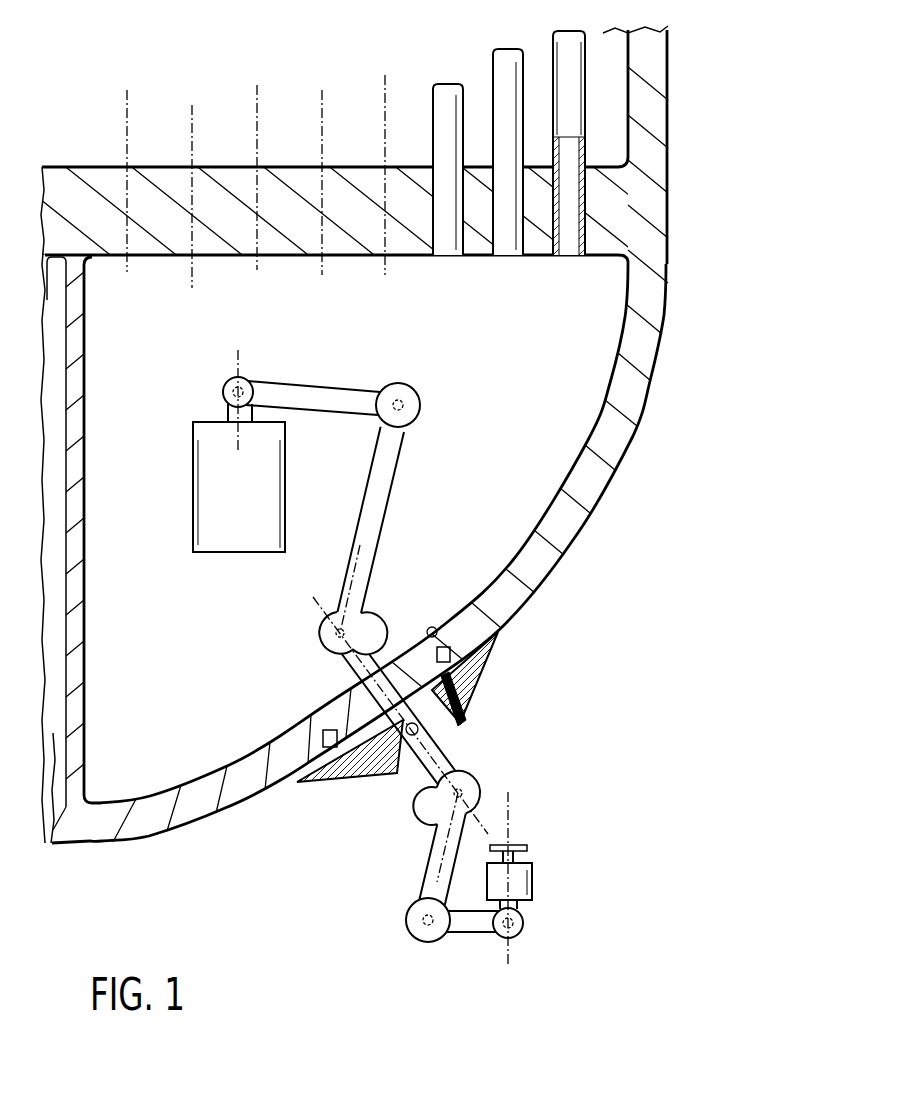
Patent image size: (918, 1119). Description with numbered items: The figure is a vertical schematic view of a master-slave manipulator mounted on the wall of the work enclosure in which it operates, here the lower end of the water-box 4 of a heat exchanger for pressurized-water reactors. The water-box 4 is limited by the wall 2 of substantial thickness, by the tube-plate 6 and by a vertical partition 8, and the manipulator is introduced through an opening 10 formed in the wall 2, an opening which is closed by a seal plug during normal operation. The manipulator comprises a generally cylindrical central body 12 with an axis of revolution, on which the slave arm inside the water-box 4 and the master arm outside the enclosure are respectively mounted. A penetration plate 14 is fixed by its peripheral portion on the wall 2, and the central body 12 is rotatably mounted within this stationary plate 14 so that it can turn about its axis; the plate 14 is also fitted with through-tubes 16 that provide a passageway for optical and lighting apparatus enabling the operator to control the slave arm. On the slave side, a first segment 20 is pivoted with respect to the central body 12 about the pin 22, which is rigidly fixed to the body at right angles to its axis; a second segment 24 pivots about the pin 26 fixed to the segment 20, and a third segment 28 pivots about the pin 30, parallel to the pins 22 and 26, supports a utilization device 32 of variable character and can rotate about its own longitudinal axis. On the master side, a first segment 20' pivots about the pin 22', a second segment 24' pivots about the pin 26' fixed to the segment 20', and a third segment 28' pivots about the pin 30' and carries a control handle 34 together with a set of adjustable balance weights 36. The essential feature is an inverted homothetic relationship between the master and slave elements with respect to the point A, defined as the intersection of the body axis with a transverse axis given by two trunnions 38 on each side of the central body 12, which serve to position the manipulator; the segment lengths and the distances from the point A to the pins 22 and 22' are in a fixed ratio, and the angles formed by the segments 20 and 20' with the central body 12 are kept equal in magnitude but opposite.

The wall 2 is at (574, 518).
The water-box 4 is at (560, 373).
The tube-plate 6 is at (112, 182).
The vertical partition 8 is at (85, 705).
The opening 10 is at (436, 626).
The central body 12 is at (475, 702).
The penetration plate 14 is at (500, 633).
The through-tubes 16 is at (330, 786).
The first segment of slave arm 20 is at (401, 530).
The first segment of master arm 20' is at (407, 849).
The pin 22 is at (332, 616).
The pin 22' is at (485, 780).
The second segment of slave arm 24 is at (315, 379).
The second segment of master arm 24' is at (454, 956).
The pin 26 is at (425, 386).
The pin 26' is at (401, 938).
The third segment of slave arm 28 is at (200, 384).
The third segment of master arm 28' is at (563, 906).
The pin 30 is at (264, 408).
The pin 30' is at (559, 878).
The utilization device 32 is at (222, 525).
The control handle 34 is at (522, 848).
The adjustable balance weights 36 is at (533, 872).
The trunnions 38 is at (338, 700).
The point A is at (447, 742).